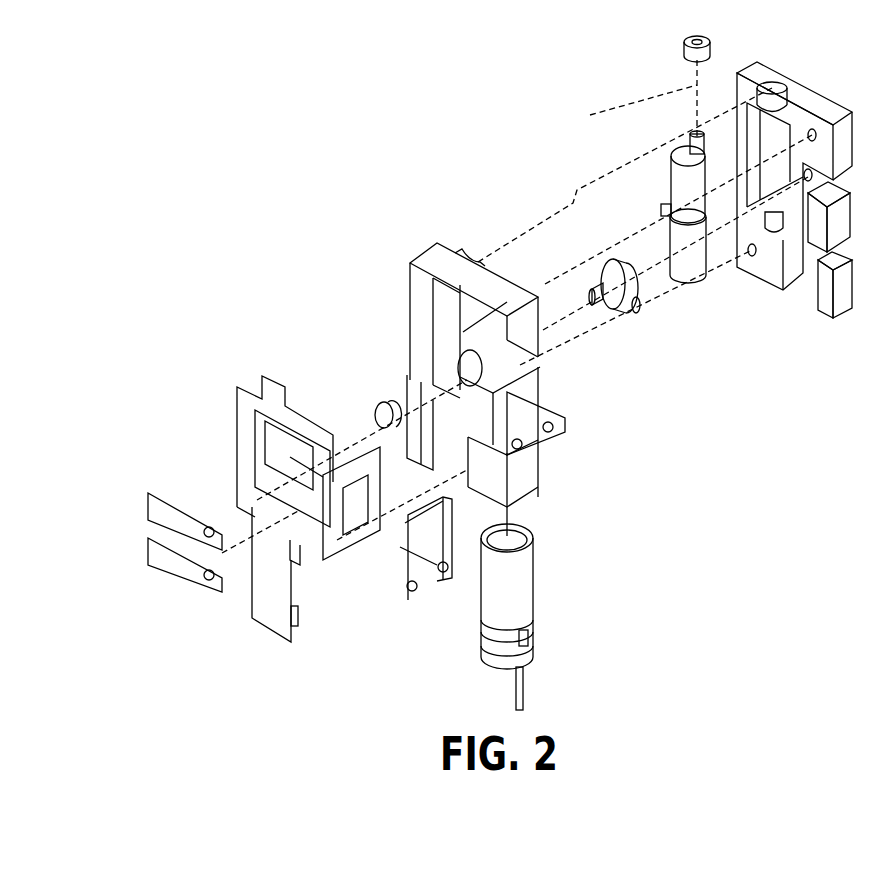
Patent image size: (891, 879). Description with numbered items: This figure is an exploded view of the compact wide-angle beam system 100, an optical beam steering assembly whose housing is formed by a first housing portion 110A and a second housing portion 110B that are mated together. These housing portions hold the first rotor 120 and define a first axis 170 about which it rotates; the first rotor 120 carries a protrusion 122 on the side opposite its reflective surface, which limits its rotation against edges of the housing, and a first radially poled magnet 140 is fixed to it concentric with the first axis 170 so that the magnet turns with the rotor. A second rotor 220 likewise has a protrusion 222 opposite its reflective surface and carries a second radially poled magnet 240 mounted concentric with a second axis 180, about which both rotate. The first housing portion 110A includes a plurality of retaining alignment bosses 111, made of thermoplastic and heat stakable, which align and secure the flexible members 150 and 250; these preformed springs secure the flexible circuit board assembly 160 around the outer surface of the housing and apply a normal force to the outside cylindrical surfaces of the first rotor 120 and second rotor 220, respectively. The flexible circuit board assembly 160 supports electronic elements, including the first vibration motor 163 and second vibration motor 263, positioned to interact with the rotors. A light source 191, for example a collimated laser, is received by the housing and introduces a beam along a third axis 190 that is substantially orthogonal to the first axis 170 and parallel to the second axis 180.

The compact wide-angle beam system 100 is at (278, 157).
The first housing portion 110A is at (417, 342).
The second housing portion 110B is at (828, 298).
The retaining alignment bosses 111 is at (510, 441).
The first rotor 120 is at (603, 270).
The protrusion 122 is at (637, 313).
The first radially poled magnet 140 is at (376, 403).
The flexible member 150 is at (400, 606).
The flexible circuit board assembly 160 is at (248, 642).
The first vibration motor 163 is at (343, 440).
The first axis 170 is at (557, 300).
The second axis 180 is at (698, 95).
The third axis 190 is at (800, 293).
The light source 191 is at (518, 600).
The second rotor 220 is at (672, 190).
The protrusion 222 is at (662, 205).
The second radially poled magnet 240 is at (684, 46).
The flexible member 250 is at (190, 565).
The second vibration motor 263 is at (237, 400).